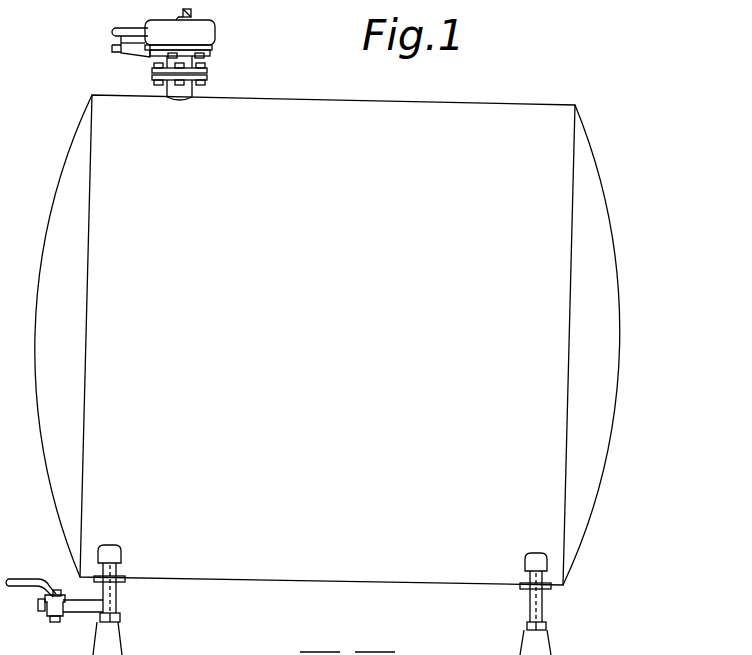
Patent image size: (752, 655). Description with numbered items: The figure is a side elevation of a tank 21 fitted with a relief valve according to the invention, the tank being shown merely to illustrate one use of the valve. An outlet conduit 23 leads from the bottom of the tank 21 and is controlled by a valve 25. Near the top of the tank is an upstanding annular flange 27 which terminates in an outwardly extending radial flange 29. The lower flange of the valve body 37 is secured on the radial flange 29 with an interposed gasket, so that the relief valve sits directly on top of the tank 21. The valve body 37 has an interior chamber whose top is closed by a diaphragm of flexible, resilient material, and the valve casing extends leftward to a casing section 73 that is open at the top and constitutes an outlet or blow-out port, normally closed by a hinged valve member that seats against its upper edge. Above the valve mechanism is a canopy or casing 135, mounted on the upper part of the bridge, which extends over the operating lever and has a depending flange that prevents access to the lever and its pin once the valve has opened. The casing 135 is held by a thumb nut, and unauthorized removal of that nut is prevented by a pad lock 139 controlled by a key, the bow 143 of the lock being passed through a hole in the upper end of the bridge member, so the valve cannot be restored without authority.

The tank 21 is at (604, 234).
The outlet conduit 23 is at (90, 607).
The valve 25 is at (60, 595).
The upstanding annular flange 27 is at (195, 90).
The radial flange 29 is at (207, 73).
The valve body 37 is at (212, 55).
The casing section 73 is at (132, 42).
The canopy or casing 135 is at (207, 32).
The pad lock 139 is at (360, 641).
The bow 143 is at (306, 641).